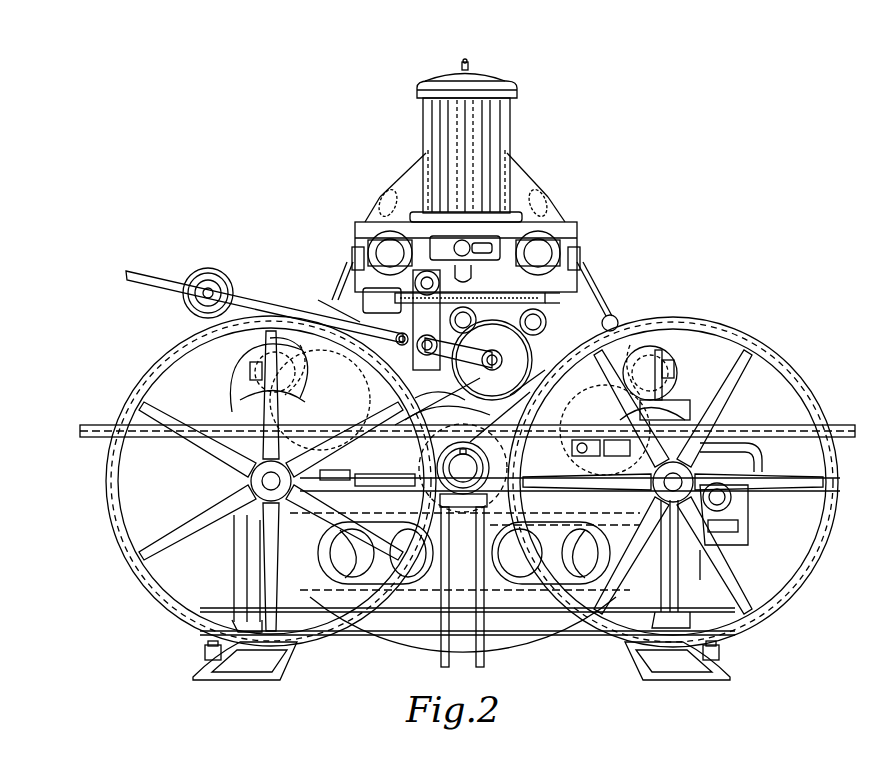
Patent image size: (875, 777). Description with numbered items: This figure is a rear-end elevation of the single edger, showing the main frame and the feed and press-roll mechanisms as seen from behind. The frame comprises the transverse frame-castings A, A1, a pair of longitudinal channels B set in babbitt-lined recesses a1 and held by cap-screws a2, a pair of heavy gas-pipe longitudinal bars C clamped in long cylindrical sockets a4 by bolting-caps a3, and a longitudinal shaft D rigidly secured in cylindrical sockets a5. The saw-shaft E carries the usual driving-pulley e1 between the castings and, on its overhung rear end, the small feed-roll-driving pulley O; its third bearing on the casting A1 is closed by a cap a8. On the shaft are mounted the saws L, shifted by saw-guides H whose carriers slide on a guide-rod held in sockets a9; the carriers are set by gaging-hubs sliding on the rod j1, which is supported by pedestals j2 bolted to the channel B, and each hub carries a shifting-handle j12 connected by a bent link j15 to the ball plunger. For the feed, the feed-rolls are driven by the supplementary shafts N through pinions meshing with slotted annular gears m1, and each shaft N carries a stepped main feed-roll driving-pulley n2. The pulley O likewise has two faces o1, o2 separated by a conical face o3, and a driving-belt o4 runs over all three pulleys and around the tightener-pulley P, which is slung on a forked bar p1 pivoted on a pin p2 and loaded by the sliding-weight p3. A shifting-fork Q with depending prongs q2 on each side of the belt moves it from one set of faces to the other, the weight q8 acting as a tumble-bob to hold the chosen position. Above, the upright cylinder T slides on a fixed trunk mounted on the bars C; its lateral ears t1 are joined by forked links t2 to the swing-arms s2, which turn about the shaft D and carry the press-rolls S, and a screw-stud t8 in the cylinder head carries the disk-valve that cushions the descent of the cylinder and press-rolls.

The upright cylinder T is at (510, 120).
The screw-stud t8 is at (470, 66).
The lateral ears t1 is at (520, 180).
The forked links t2 is at (596, 282).
The longitudinal bars C is at (375, 243).
The bolting-caps a3 is at (383, 214).
The cylindrical sockets a4 is at (352, 258).
The shifting-fork Q is at (465, 248).
The cylindrical sockets a5 is at (470, 290).
The depending prongs q2 is at (380, 315).
The weight q8 is at (546, 322).
The tightener-pulley P is at (492, 360).
The longitudinal shaft D is at (487, 338).
The forked bar p1 is at (118, 292).
The pin p2 is at (405, 345).
The sliding-weight p3 is at (185, 300).
The driving-belt o4 is at (590, 640).
The saws L is at (528, 385).
The driving-pulley e1 is at (447, 398).
The annular gears m1 is at (245, 425).
The main feed-roll driving-pulley n2 is at (128, 512).
The press-rolls S is at (248, 380).
The swing-arms s2 is at (305, 360).
The saw-shaft E is at (463, 468).
The feed-roll-driving pulley O is at (460, 442).
The belt-face o1 is at (489, 424).
The conical face o3 is at (507, 432).
The belt-face o2 is at (462, 495).
The cap-screws a2 is at (258, 536).
The cap a8 is at (400, 488).
The sockets a9 is at (578, 482).
The saw-guides H is at (590, 440).
The supplementary shafts N is at (692, 452).
The shifting-handle j12 is at (762, 445).
The rod j1 is at (725, 497).
The bent link j15 is at (740, 532).
The pedestals j2 is at (690, 555).
The longitudinal channels B is at (235, 583).
The babbitt-lined recesses a1 is at (262, 612).
The transverse frame-castings A is at (515, 640).
The transverse frame-casting A1 is at (400, 605).